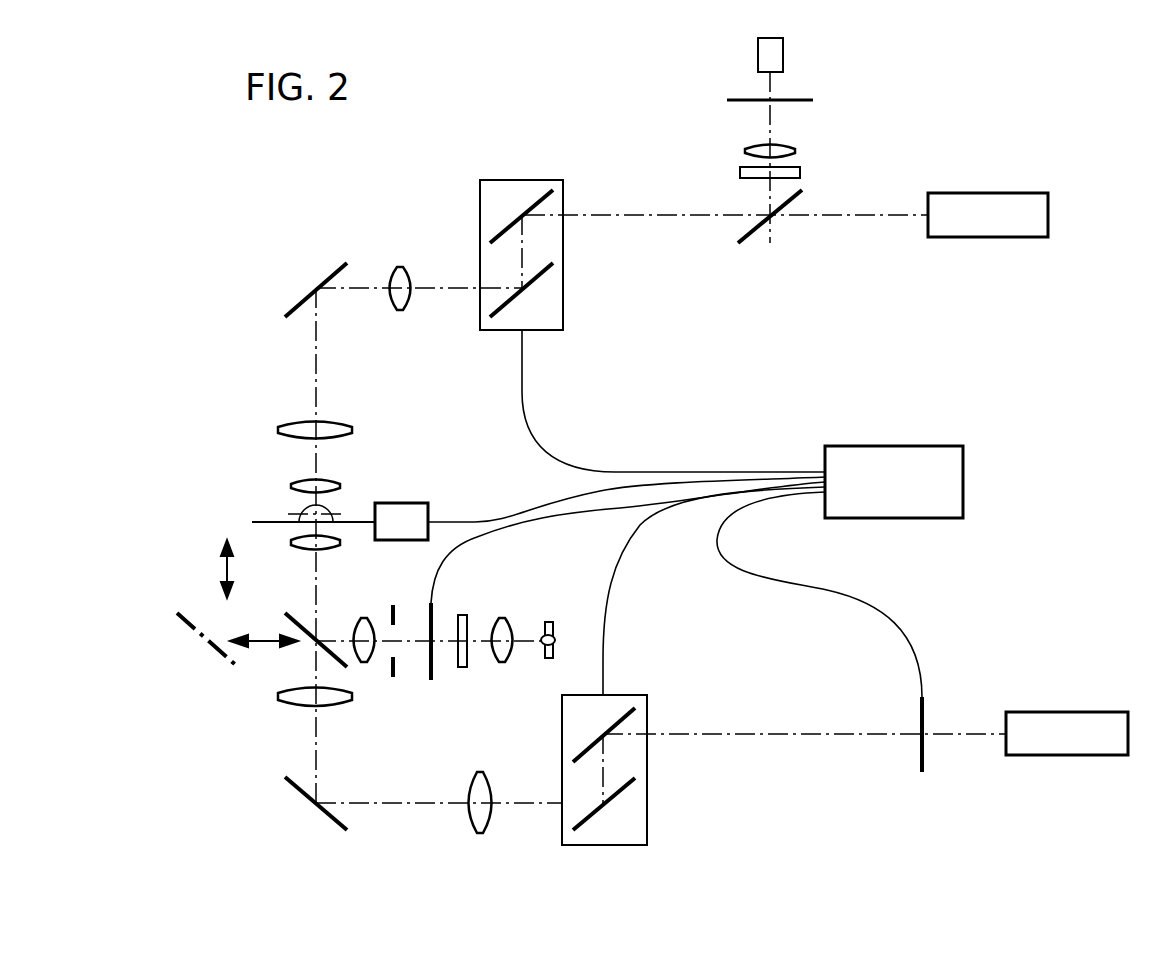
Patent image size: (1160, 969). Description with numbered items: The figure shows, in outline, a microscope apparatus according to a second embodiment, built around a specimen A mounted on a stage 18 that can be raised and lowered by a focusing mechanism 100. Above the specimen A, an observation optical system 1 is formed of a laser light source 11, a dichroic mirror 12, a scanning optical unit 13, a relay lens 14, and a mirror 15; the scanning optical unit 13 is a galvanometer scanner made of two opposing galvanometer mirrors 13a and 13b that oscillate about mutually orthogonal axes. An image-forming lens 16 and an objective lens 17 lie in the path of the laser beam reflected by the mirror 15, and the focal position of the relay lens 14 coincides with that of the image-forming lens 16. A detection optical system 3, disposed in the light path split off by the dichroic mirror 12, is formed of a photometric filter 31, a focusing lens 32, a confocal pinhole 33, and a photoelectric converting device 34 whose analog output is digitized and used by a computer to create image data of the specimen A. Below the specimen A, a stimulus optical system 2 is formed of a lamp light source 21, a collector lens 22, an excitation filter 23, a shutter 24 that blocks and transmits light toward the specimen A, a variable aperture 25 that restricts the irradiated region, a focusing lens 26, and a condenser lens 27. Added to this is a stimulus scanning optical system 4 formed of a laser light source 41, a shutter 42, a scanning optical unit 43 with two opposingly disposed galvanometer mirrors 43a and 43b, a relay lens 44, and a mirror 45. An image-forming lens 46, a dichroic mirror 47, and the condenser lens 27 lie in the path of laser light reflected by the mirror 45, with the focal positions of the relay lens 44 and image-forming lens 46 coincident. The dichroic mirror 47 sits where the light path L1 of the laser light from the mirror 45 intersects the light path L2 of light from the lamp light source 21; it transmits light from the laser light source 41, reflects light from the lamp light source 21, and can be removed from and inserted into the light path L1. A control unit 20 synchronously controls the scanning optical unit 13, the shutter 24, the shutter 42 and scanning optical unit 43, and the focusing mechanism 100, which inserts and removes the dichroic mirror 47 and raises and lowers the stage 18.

The observation optical system 1 is at (822, 292).
The stimulus optical system 2 is at (550, 568).
The detection optical system 3 is at (875, 160).
The stimulus scanning optical system 4 is at (788, 798).
The laser light source 11 is at (985, 193).
The dichroic mirror 12 is at (757, 238).
The scanning optical unit 13 is at (565, 256).
The galvanometer mirror 13a is at (530, 195).
The galvanometer mirror 13b is at (540, 276).
The relay lens 14 is at (400, 266).
The mirror 15 is at (297, 300).
The image-forming lens 16 is at (340, 420).
The objective lens 17 is at (290, 485).
The stage 18 is at (360, 524).
The control unit 20 is at (892, 446).
The lamp light source 21 is at (550, 622).
The collector lens 22 is at (503, 617).
The excitation filter 23 is at (468, 655).
The shutter 24 is at (432, 668).
The variable aperture 25 is at (393, 608).
The focusing lens 26 is at (366, 663).
The condenser lens 27 is at (305, 549).
The photometric filter 31 is at (740, 172).
The focusing lens 32 is at (797, 148).
The confocal pinhole 33 is at (740, 100).
The photoelectric converting device 34 is at (785, 50).
The laser light source 41 is at (1055, 712).
The shutter 42 is at (925, 760).
The scanning optical unit 43 is at (648, 771).
The galvanometer mirror 43a is at (575, 748).
The galvanometer mirror 43b is at (583, 824).
The relay lens 44 is at (492, 820).
The mirror 45 is at (325, 815).
The image-forming lens 46 is at (280, 695).
The dichroic mirror 47 is at (290, 622).
The focusing mechanism 100 is at (405, 503).
The specimen A is at (298, 512).
The light path L1 is at (316, 757).
The light path L2 is at (338, 640).